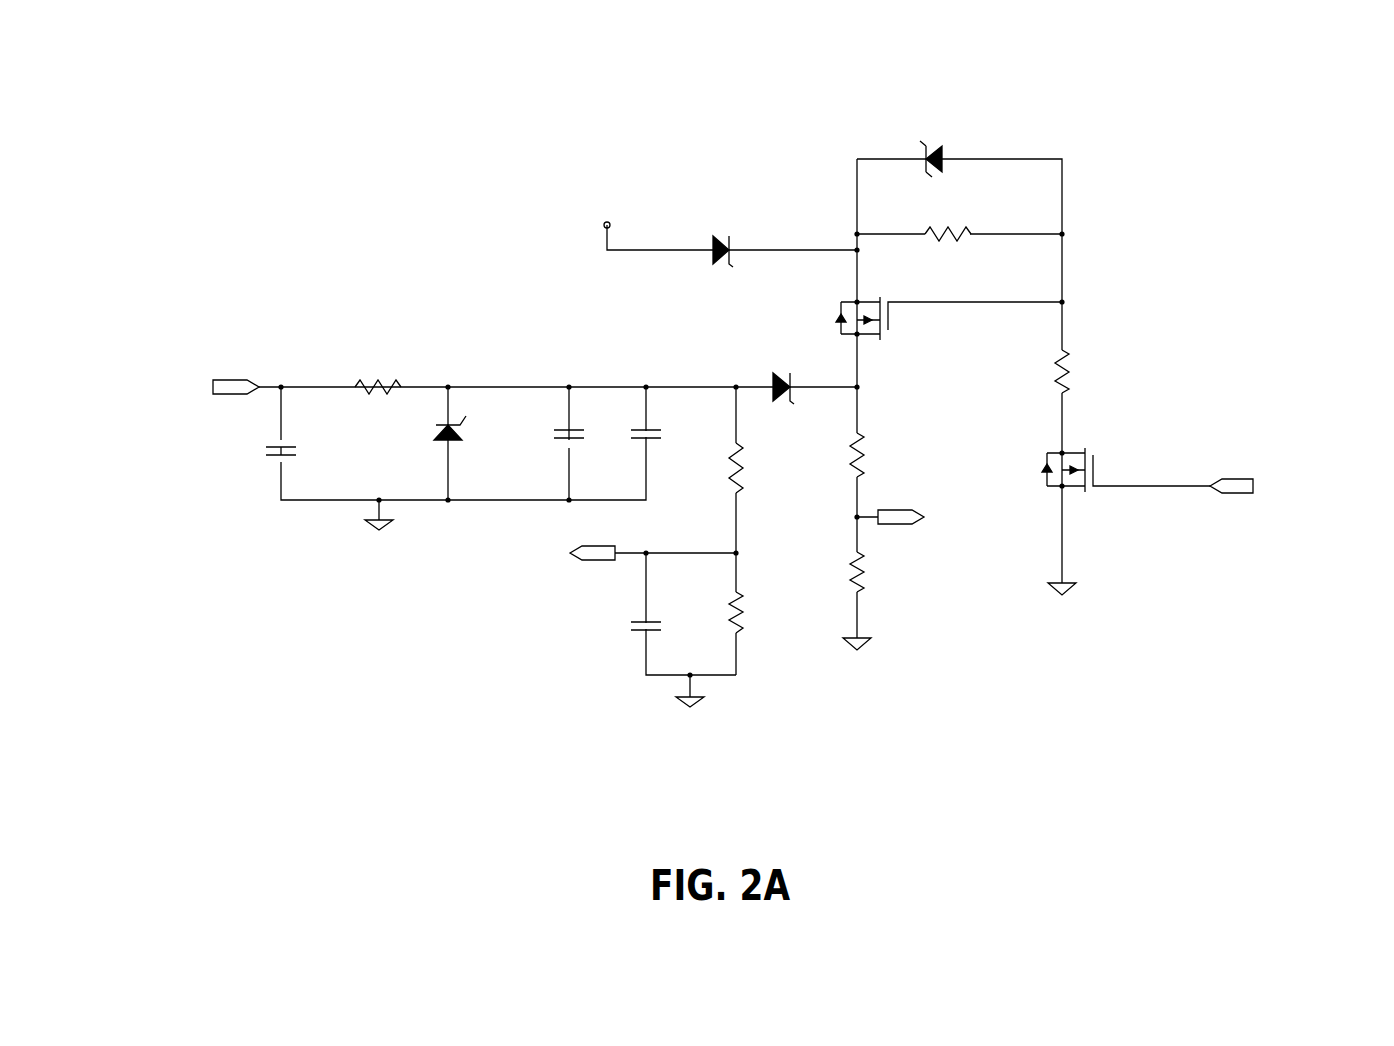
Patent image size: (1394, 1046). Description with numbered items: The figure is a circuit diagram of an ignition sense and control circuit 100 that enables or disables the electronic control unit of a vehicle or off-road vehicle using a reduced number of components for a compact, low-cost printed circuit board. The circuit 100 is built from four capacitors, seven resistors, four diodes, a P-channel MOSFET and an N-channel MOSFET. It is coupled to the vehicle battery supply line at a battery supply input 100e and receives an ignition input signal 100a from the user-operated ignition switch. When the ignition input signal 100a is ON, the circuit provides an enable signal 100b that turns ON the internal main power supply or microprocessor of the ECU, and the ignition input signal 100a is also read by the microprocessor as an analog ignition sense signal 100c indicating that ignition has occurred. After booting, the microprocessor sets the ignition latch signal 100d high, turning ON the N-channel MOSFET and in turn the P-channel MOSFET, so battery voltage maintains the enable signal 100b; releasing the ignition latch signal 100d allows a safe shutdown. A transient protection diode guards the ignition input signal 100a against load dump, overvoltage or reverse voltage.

The ignition sense and control circuit 100 is at (1118, 180).
The ignition input signal 100a is at (233, 380).
The enable signal 100b is at (898, 523).
The ignition sense signal 100c is at (597, 562).
The ignition latch signal 100d is at (1225, 492).
The battery supply input 100e is at (602, 228).